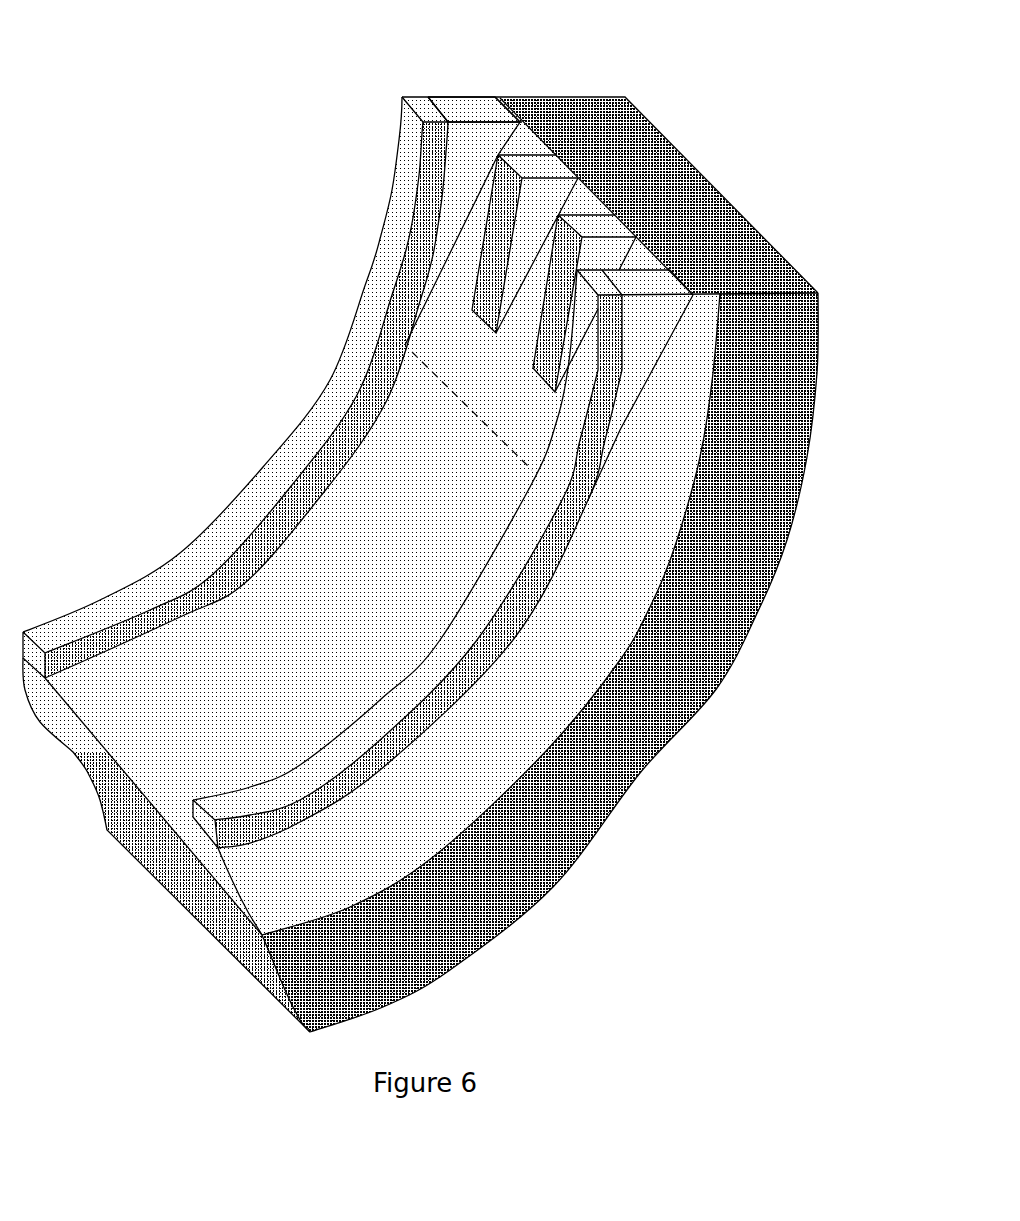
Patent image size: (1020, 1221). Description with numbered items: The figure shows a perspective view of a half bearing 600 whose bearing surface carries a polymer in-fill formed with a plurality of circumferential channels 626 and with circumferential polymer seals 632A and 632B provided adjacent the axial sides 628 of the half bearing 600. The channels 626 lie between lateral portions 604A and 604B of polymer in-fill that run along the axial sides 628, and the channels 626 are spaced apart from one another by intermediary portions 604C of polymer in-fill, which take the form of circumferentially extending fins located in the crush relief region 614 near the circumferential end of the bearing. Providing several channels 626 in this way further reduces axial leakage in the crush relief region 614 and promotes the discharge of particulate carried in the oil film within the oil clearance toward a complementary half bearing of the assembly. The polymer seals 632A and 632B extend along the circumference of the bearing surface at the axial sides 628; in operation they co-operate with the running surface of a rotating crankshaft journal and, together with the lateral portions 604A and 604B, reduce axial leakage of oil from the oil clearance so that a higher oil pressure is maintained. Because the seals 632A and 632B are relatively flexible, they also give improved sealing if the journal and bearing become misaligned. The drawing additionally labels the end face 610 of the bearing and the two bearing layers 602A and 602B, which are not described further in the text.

The half bearing 600 is at (640, 917).
The first layer 602A is at (327, 540).
The second layer 602B is at (622, 764).
The lateral portion of polymer in-fill 604A is at (464, 112).
The lateral portion of polymer in-fill 604B is at (657, 283).
The intermediary portions of polymer in-fill 604C is at (548, 358).
The end surface 610 is at (578, 109).
The crush relief region 614 is at (637, 439).
The circumferential channels 626 is at (618, 270).
The axial sides 628 is at (703, 645).
The polymer seal 632A is at (180, 575).
The polymer seal 632B is at (340, 750).